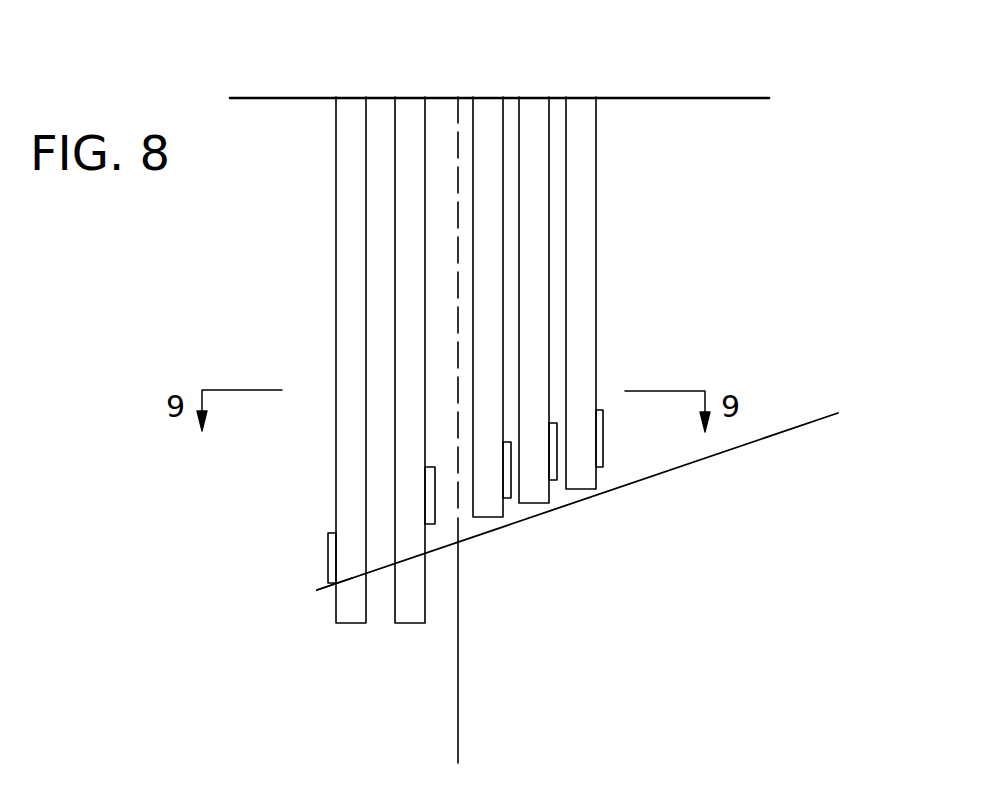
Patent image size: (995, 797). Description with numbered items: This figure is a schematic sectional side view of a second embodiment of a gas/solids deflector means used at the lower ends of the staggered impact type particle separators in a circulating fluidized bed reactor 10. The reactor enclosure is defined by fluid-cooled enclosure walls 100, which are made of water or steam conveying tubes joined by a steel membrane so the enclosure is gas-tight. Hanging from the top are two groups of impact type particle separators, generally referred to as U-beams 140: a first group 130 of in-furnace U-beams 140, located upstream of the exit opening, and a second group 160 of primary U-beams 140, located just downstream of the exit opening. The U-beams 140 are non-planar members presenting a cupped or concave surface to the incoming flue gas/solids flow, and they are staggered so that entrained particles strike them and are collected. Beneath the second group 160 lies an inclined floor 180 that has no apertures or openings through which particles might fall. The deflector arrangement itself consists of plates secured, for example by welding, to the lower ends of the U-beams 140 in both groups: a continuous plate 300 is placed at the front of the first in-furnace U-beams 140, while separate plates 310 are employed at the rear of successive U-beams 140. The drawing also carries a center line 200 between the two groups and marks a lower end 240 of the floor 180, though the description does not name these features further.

The circulating fluidized bed reactor 10 is at (683, 595).
The enclosure walls 100 is at (286, 97).
The first group of staggered impact type particle separators 130 is at (322, 321).
The impact type particle separator 140 is at (410, 218).
The second group of impact type particle separators 160 is at (613, 260).
The floor 180 is at (702, 465).
The center line 200 is at (459, 673).
The lower end of inclined edge 240 is at (318, 592).
The continuous plate 300 is at (328, 557).
The separate plates 310 is at (426, 490).